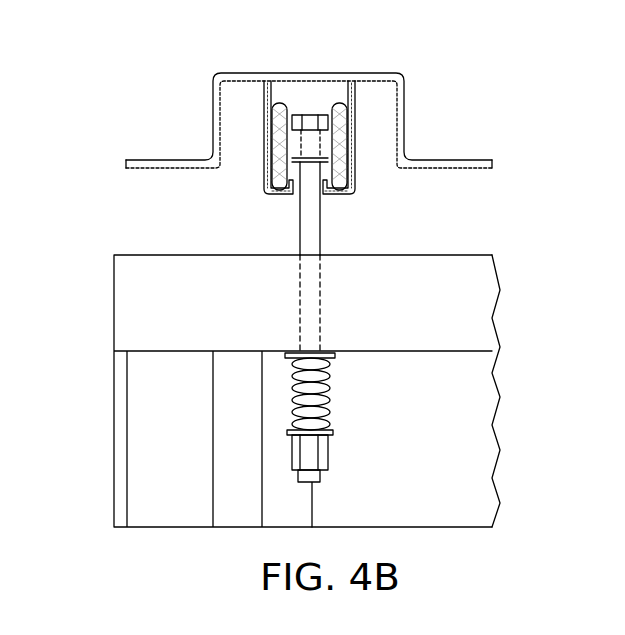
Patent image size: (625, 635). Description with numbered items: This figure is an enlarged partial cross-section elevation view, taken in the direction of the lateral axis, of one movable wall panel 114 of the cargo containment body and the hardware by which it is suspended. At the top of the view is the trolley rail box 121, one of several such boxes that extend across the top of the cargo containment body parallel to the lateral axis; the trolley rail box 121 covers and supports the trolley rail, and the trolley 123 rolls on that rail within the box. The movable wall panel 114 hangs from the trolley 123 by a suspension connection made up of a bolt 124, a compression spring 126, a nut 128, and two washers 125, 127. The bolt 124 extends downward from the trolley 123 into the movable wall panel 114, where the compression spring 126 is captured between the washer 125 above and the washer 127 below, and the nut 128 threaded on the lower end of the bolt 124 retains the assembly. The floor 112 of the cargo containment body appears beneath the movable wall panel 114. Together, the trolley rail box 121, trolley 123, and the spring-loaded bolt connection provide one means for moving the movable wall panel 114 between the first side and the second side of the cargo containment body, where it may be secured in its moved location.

The floor 112 is at (263, 183).
The movable wall panel 114 is at (216, 317).
The trolley rail box 121 is at (253, 73).
The trolley 123 is at (335, 100).
The bolt 124 is at (322, 234).
The washer 125 is at (336, 351).
The compression spring 126 is at (330, 395).
The washer 127 is at (334, 434).
The nut 128 is at (329, 456).